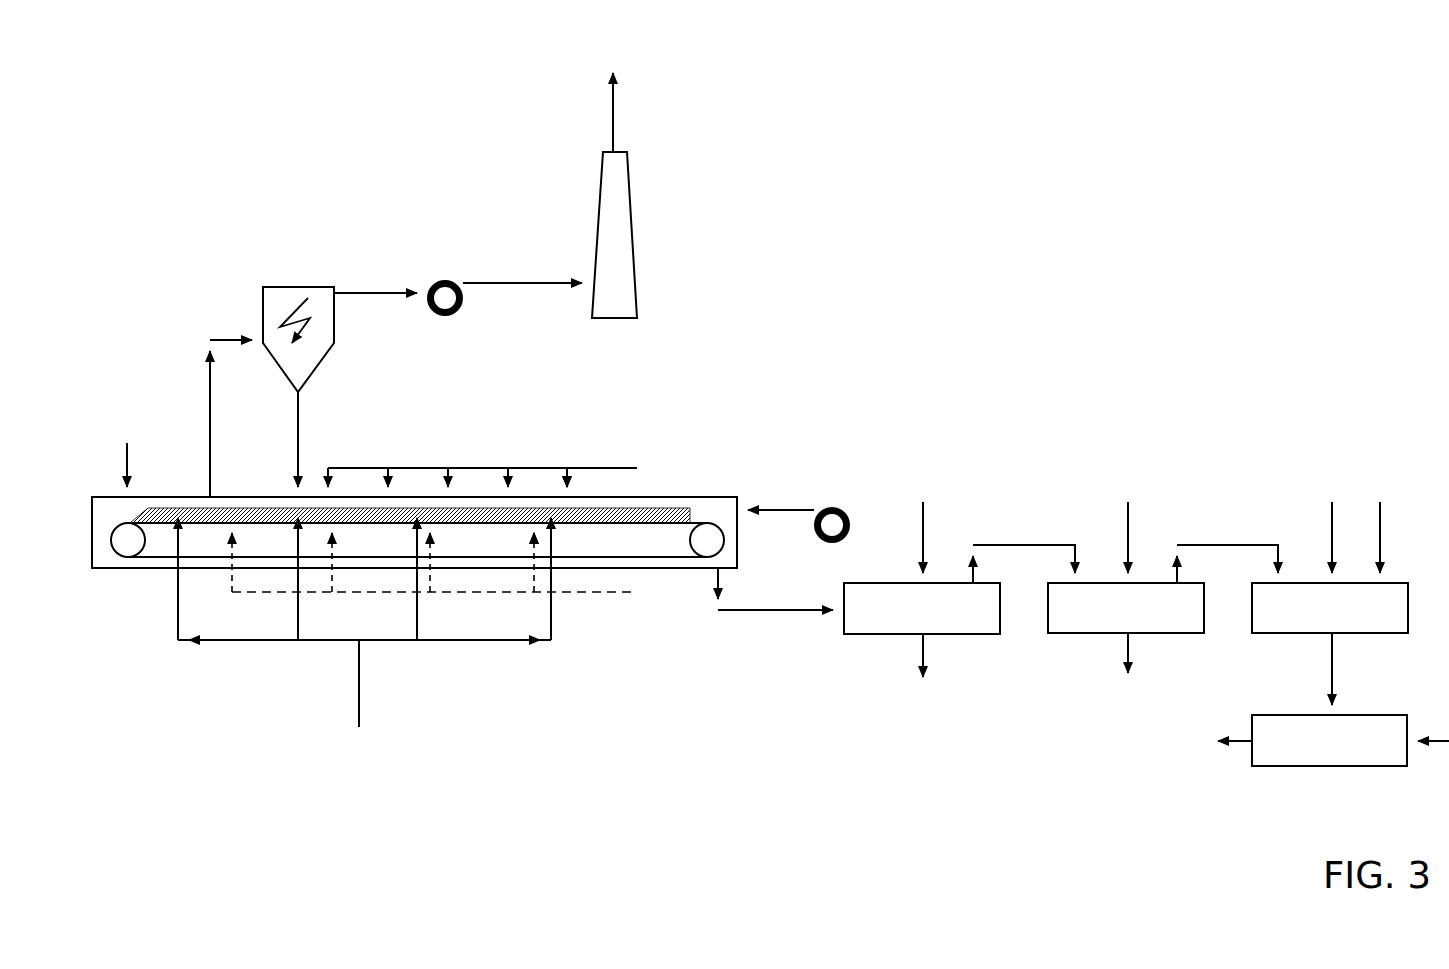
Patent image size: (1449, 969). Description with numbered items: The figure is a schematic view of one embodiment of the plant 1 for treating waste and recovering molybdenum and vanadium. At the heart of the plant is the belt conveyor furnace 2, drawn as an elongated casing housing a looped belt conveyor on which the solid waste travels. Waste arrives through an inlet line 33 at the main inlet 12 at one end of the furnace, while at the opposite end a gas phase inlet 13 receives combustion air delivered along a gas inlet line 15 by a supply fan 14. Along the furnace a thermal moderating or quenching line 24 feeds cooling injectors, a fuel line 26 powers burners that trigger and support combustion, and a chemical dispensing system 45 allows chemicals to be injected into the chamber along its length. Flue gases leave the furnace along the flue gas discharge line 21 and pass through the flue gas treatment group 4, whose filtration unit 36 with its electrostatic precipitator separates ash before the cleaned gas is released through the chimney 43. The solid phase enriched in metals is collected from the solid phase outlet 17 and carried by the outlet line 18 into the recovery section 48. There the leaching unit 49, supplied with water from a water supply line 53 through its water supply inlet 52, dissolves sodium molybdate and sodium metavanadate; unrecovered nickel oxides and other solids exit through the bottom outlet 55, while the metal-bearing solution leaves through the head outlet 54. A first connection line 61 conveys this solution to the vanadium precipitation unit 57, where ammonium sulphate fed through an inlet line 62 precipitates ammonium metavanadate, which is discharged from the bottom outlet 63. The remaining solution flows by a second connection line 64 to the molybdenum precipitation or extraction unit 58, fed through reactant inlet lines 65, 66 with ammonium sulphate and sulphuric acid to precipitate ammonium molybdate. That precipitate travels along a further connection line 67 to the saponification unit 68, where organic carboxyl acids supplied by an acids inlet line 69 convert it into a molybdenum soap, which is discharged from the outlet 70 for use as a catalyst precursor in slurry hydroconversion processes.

The plant 1 is at (777, 327).
The belt conveyor furnace 2 is at (684, 505).
The flue gas treatment group 4 is at (313, 243).
The main inlet 12 is at (125, 500).
The gas phase inlet 13 is at (725, 500).
The supply fan 14 is at (845, 515).
The gas inlet line 15 is at (808, 510).
The solid phase outlet 17 is at (718, 575).
The outlet line 18 is at (757, 612).
The flue gas discharge line 21 is at (503, 283).
The thermal moderating or quenching line 24 is at (472, 642).
The fuel line 26 is at (603, 596).
The inlet line 33 is at (130, 452).
The filtration unit 36 is at (273, 292).
The chimney 43 is at (618, 214).
The chemical dispensing system 45 is at (478, 468).
The recovery section 48 is at (1071, 486).
The leaching unit 49 is at (866, 618).
The water supply inlet 52 is at (918, 585).
The water supply line 53 is at (926, 505).
The head outlet 54 is at (968, 585).
The bottom outlet 55 is at (925, 628).
The vanadium precipitation unit 57 is at (1158, 592).
The molybdenum precipitation or extraction unit 58 is at (1355, 592).
The first connection line 61 is at (1010, 545).
The inlet line 62 is at (1126, 505).
The bottom outlet 63 is at (1122, 630).
The second connection line 64 is at (1231, 545).
The reactant inlet line 65 is at (1330, 518).
The reactant inlet line 66 is at (1383, 510).
The further connection line 67 is at (1335, 678).
The saponification unit 68 is at (1298, 752).
The acids inlet line 69 is at (1436, 743).
The outlet 70 is at (1222, 743).